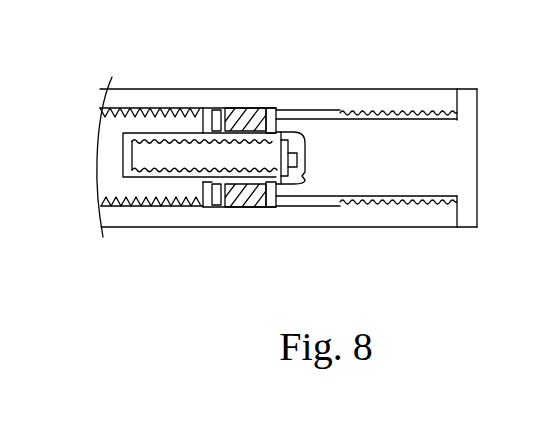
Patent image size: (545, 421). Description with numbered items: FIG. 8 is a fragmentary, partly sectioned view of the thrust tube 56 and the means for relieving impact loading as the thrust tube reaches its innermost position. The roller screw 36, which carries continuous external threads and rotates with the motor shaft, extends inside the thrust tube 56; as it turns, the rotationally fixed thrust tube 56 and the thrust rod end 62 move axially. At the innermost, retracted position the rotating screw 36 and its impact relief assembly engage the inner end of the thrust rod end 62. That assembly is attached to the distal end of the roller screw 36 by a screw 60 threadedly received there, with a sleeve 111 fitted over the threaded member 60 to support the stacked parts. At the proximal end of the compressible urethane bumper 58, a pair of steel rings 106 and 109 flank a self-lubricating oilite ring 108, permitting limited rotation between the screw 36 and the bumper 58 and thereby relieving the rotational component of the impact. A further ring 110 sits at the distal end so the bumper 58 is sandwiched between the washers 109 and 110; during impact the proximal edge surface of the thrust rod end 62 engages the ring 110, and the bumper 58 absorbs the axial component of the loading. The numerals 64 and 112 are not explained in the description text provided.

The roller screw shaft 36 is at (141, 123).
The thrust tube 56 is at (393, 217).
The compressible bumper 58 is at (253, 115).
The screw 60 is at (175, 153).
The thrust rod end 62 is at (382, 128).
The end wall 64 is at (467, 102).
The steel ring 106 is at (205, 206).
The self-lubricating ring 108 is at (213, 113).
The steel ring 109 is at (218, 205).
The ring 110 is at (275, 205).
The sleeve 111 is at (276, 112).
The retaining clip 112 is at (304, 185).